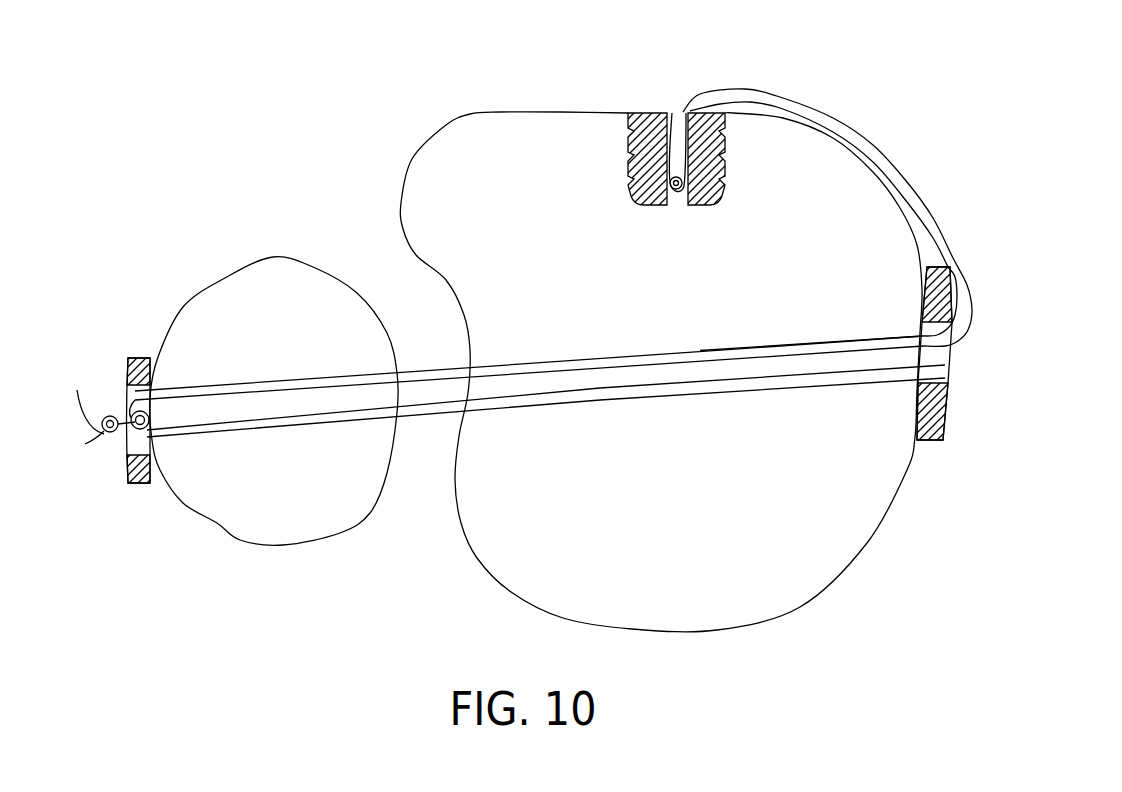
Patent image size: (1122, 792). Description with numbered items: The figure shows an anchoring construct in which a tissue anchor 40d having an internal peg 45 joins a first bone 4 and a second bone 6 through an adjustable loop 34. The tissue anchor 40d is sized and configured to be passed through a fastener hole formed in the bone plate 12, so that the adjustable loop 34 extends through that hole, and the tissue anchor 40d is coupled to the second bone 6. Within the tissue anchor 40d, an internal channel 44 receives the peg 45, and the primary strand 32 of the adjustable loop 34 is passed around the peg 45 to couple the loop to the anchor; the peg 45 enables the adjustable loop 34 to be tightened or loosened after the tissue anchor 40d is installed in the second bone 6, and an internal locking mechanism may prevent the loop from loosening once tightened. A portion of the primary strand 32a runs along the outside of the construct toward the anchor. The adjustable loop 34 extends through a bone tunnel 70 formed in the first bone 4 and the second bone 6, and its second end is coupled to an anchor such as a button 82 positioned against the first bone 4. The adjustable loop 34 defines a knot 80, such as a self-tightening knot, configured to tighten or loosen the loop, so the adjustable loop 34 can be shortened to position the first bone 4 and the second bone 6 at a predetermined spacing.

The first bone 4 is at (240, 540).
The second bone 6 is at (787, 610).
The bone plate 12 is at (950, 423).
The primary strand 32 is at (432, 376).
The strap portion 32a is at (874, 146).
The adjustable loop 34 is at (431, 407).
The tissue anchor 40d is at (651, 112).
The internal channel 44 is at (677, 113).
The peg 45 is at (674, 190).
The bone tunnel 70 is at (727, 346).
The knot 80 is at (107, 443).
The button 82 is at (137, 357).